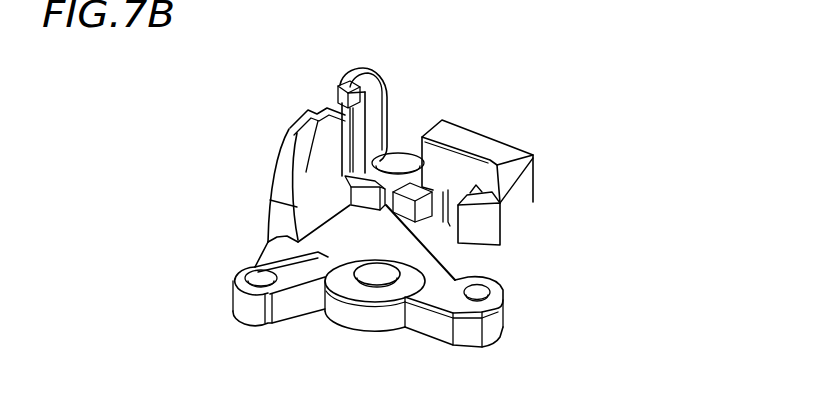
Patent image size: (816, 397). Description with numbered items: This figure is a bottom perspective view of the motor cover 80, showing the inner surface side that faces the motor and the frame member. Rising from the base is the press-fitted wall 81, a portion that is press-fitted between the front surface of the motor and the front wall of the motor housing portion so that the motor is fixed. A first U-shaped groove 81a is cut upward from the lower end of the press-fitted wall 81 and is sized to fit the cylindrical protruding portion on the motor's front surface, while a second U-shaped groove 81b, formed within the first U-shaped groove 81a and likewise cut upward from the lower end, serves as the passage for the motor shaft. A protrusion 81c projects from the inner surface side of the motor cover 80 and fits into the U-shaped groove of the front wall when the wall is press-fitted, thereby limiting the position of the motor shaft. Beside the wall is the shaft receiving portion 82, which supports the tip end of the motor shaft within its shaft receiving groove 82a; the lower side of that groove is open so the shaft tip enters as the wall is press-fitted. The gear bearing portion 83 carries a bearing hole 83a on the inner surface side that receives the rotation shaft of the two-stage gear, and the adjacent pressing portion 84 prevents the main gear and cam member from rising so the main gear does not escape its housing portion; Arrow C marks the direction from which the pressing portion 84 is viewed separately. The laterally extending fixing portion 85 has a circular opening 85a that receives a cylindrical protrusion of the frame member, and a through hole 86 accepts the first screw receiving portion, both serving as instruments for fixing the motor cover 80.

The motor cover 80 is at (553, 108).
The press-fitted wall 81 is at (377, 94).
The first U-shaped groove 81a is at (336, 100).
The second U-shaped groove 81b is at (366, 68).
The protrusion 81c is at (347, 173).
The shaft receiving portion 82 is at (508, 219).
The shaft receiving groove 82a is at (488, 192).
The gear bearing portion 83 is at (334, 307).
The bearing hole 83a is at (374, 279).
The pressing portion 84 is at (493, 320).
The fixing portion 85 is at (250, 303).
The circular opening 85a is at (262, 260).
The through hole 86 is at (403, 163).
The Arrow C is at (438, 350).